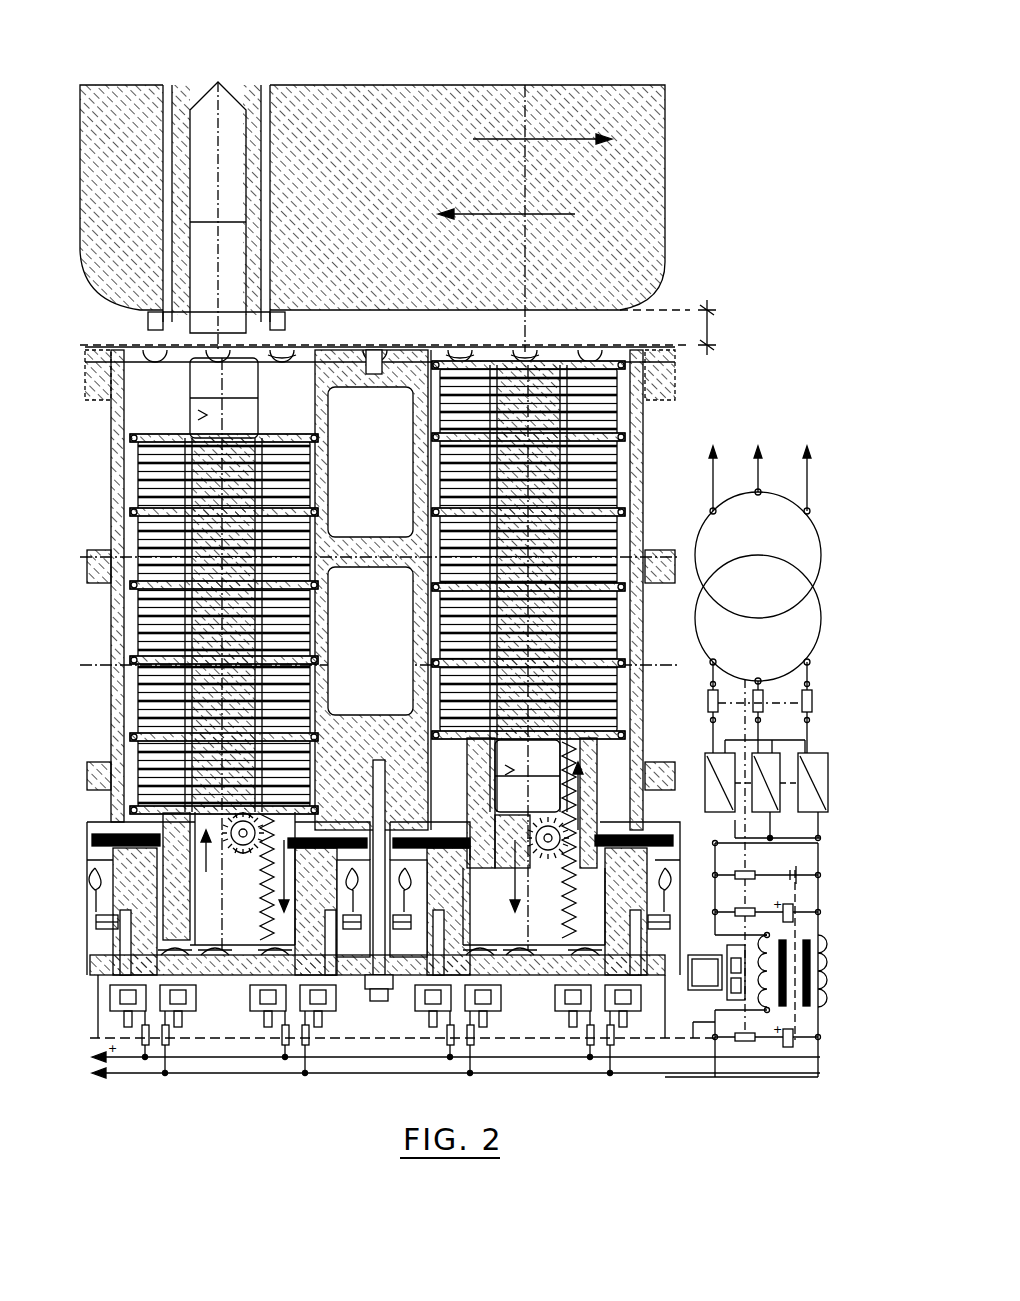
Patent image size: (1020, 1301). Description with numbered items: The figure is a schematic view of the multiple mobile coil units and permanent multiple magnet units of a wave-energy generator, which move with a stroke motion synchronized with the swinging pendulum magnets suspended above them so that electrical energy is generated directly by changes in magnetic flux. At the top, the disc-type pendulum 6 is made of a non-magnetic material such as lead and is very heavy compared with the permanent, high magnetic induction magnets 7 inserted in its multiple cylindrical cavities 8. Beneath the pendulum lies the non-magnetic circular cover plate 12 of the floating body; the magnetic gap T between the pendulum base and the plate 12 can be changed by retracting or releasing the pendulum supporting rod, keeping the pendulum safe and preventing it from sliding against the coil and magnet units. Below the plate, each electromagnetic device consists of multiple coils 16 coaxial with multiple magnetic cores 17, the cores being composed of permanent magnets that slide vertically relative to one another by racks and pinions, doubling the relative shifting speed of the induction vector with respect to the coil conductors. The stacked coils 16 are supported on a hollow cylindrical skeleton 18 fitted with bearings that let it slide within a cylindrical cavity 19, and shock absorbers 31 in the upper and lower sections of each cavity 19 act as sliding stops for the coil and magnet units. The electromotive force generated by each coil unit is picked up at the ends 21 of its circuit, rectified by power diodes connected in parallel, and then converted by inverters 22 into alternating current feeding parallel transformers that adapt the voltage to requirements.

The pendulum 6 is at (432, 108).
The permanent high magnetic induction magnets 7 is at (236, 150).
The cylindrical cavities 8 is at (195, 138).
The non-magnetic circular cover plate 12 is at (530, 347).
The multiple coils 16 is at (600, 525).
The magnetic cores 17 is at (206, 415).
The hollow cylindrical skeleton 18 is at (430, 492).
The cylindrical cavity 19 is at (160, 380).
The ends of the circuit 21 is at (110, 900).
The inverters 22 is at (818, 790).
The shock absorbers 31 is at (290, 348).